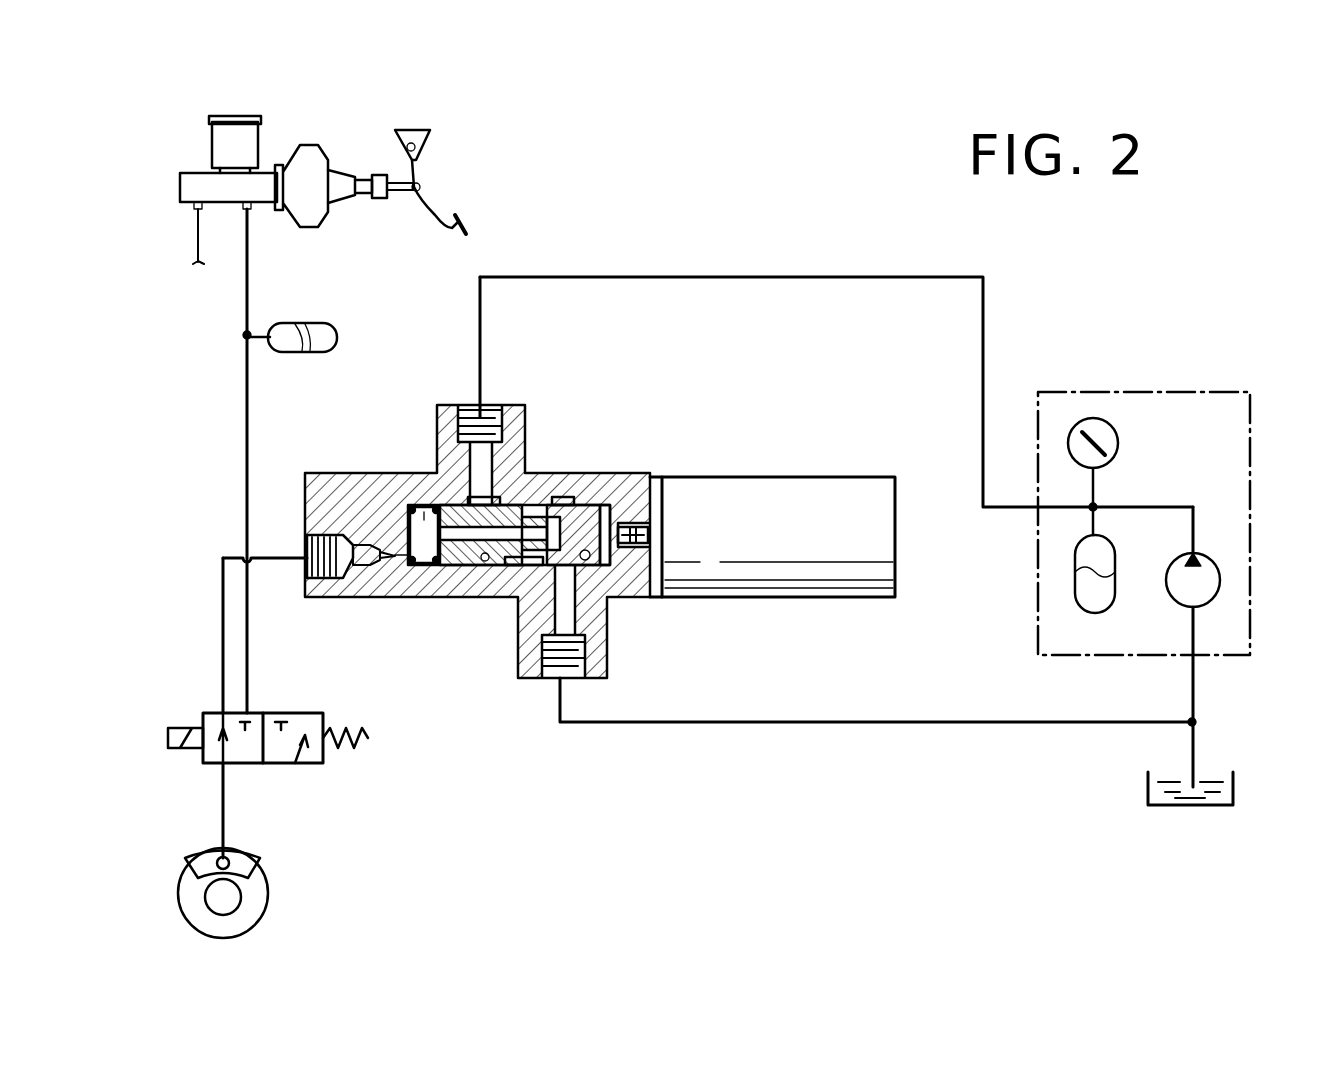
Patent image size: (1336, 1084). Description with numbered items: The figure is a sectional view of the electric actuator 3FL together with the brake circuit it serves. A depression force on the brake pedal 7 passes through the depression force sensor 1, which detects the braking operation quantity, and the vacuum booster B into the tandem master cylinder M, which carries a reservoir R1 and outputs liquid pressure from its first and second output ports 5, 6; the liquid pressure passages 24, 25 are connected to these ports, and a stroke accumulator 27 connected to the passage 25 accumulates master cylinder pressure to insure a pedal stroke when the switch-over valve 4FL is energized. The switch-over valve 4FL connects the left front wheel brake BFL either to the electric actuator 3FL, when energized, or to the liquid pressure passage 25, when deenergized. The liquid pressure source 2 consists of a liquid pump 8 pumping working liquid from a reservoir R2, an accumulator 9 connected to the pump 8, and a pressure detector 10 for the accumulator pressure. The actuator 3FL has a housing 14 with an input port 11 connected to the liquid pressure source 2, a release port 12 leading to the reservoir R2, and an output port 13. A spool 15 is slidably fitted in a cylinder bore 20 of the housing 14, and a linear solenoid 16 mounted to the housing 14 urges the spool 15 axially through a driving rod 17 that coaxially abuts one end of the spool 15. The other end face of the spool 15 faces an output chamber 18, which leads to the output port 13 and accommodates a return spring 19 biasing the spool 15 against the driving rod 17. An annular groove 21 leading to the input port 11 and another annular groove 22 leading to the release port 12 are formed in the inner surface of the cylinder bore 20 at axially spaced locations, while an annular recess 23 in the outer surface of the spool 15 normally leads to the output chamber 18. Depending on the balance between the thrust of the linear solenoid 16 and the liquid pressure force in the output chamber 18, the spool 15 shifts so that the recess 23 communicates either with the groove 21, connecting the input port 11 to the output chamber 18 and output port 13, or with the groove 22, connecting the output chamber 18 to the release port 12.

The master cylinder M is at (205, 175).
The reservoir R1 is at (243, 120).
The vacuum booster B is at (316, 152).
The depression force sensor 1 is at (376, 173).
The brake pedal 7 is at (470, 229).
The first output port 5 is at (194, 212).
The liquid pressure passage 24 is at (190, 256).
The second output port 6 is at (252, 212).
The liquid pressure passage 25 is at (240, 333).
The stroke accumulator 27 is at (337, 340).
The housing 14 is at (360, 470).
The linear solenoid 16 is at (782, 545).
The electric actuator 3FL is at (660, 462).
The input port 11 is at (490, 415).
The release port 12 is at (575, 668).
The output port 13 is at (307, 540).
The driving rod 17 is at (640, 527).
The output chamber 18 is at (424, 512).
The spool 15 is at (470, 570).
The return spring 19 is at (445, 568).
The annular groove 21 is at (485, 560).
The cylinder bore 20 is at (585, 505).
The annular recess 23 is at (552, 497).
The annular groove 22 is at (588, 560).
The switch-over valve 4FL is at (288, 712).
The left front wheel brake BFL is at (262, 868).
The liquid pressure source 2 is at (1175, 392).
The pressure detector 10 is at (1118, 445).
The accumulator 9 is at (1080, 540).
The liquid pump 8 is at (1206, 570).
The reservoir R2 is at (1235, 785).